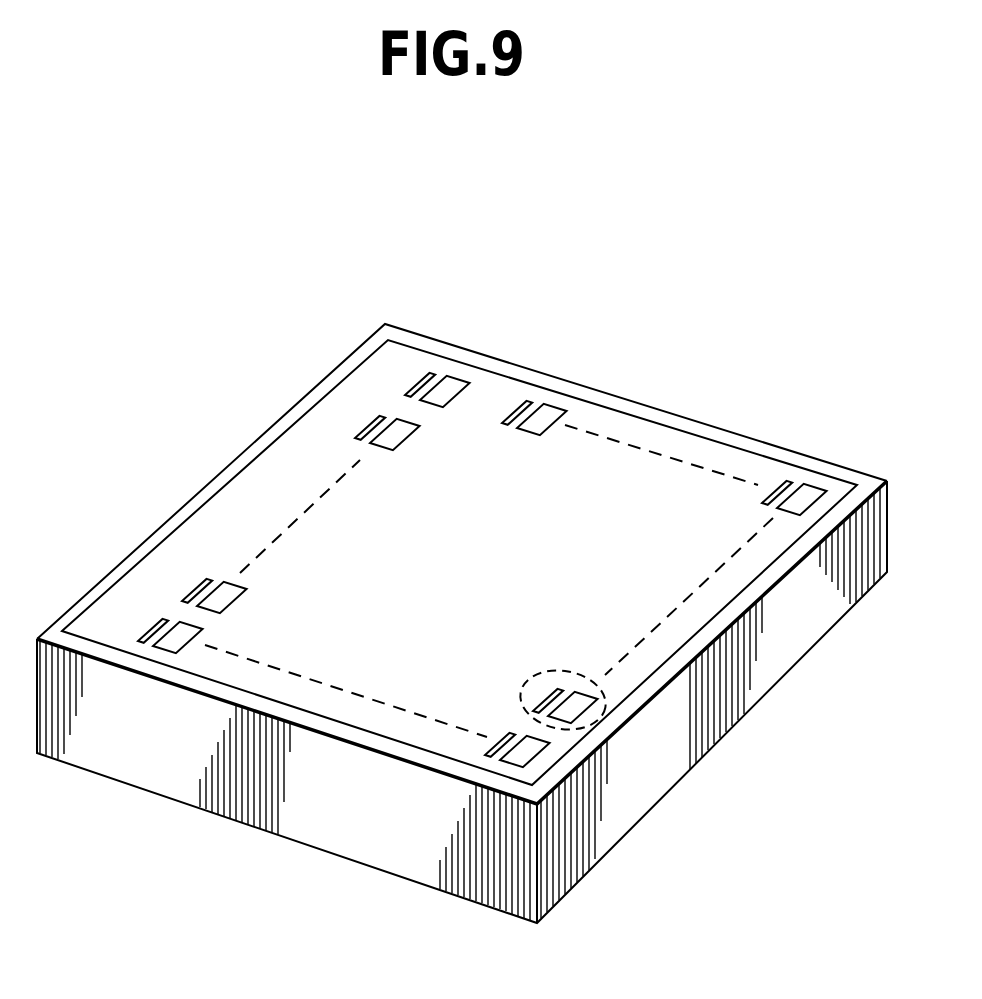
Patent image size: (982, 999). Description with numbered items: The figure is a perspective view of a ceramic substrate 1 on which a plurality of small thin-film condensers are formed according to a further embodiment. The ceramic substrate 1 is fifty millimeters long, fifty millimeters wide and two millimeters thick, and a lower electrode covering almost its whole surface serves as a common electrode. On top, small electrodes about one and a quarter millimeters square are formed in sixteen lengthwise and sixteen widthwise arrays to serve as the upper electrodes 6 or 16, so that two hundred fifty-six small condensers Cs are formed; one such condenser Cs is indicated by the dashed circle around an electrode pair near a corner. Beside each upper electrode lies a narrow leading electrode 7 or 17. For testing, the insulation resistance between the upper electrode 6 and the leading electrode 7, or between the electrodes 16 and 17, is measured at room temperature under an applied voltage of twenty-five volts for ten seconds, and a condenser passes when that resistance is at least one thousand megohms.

The ceramic substrate 1 is at (775, 648).
The leading electrode 7 is at (438, 331).
The leading electrode 17 is at (415, 383).
The upper electrode 6 is at (579, 373).
The upper electrode 16 is at (546, 415).
The small condenser Cs is at (560, 733).